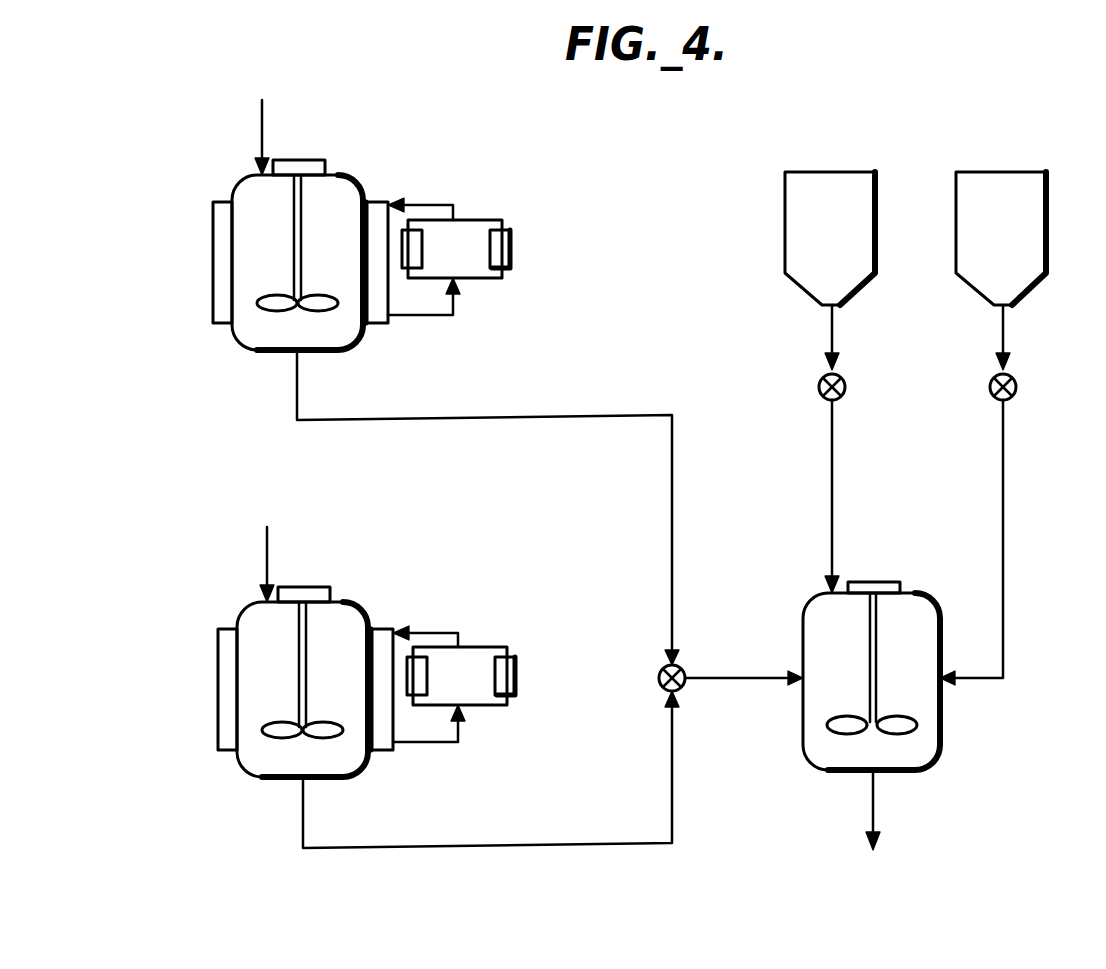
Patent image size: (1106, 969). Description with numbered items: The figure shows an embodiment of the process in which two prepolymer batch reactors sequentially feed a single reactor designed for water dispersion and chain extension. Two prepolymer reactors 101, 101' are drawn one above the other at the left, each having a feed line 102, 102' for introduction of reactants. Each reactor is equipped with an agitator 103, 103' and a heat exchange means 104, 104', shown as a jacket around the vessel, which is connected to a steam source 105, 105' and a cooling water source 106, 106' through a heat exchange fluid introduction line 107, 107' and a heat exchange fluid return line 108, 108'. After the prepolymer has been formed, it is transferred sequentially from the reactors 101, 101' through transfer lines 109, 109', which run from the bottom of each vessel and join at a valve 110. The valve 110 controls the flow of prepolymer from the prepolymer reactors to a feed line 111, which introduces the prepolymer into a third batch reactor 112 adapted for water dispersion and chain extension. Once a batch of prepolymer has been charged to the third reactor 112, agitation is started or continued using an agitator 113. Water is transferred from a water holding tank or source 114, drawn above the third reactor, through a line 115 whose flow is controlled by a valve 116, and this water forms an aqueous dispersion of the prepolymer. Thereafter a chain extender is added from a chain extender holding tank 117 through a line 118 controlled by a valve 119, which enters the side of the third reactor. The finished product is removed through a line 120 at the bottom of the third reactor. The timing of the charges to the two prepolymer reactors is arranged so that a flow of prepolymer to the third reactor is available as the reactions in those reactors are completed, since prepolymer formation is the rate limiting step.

The prepolymer reactor 101 is at (358, 222).
The feed line 102 is at (289, 137).
The agitator 103 is at (245, 322).
The heat exchange means 104 is at (288, 247).
The steam source 105 is at (452, 249).
The cooling water source 106 is at (534, 244).
The heat exchange fluid introduction line 107 is at (440, 195).
The heat exchange fluid return line 108 is at (432, 311).
The transfer line 109 is at (488, 507).
The prepolymer reactor 101' is at (366, 649).
The feed line 102' is at (296, 564).
The agitator 103' is at (250, 749).
The heat exchange means 104' is at (295, 674).
The steam source 105' is at (457, 676).
The cooling water source 106' is at (540, 671).
The heat exchange fluid introduction line 107' is at (447, 622).
The heat exchange fluid return line 108' is at (439, 739).
The transfer line 109' is at (491, 769).
The valve 110 is at (684, 668).
The feed line 111 is at (731, 680).
The third batch reactor 112 is at (818, 723).
The agitator 113 is at (848, 732).
The water holding tank 114 is at (857, 172).
The line 115 is at (832, 333).
The valve 116 is at (843, 377).
The chain extender holding tank 117 is at (1026, 172).
The line 118 is at (1003, 333).
The valve 119 is at (1014, 377).
The line 120 is at (875, 800).